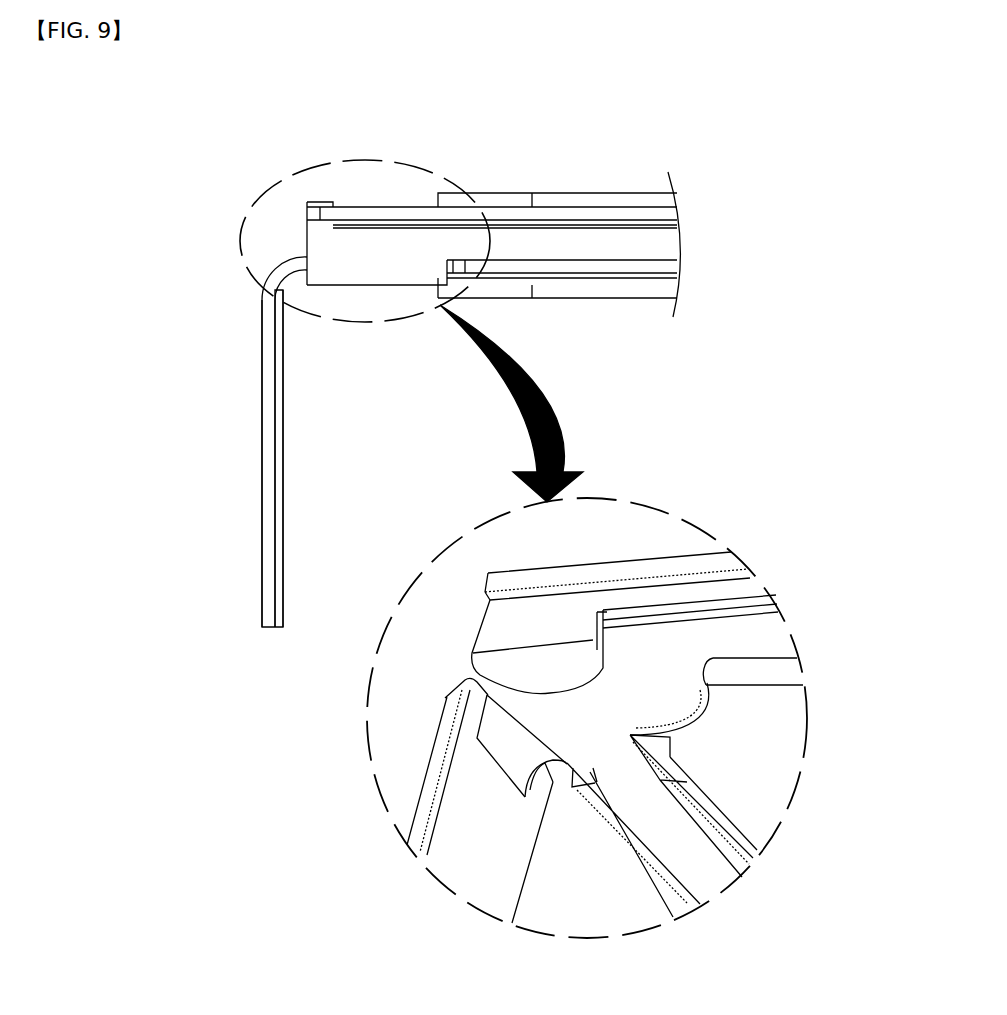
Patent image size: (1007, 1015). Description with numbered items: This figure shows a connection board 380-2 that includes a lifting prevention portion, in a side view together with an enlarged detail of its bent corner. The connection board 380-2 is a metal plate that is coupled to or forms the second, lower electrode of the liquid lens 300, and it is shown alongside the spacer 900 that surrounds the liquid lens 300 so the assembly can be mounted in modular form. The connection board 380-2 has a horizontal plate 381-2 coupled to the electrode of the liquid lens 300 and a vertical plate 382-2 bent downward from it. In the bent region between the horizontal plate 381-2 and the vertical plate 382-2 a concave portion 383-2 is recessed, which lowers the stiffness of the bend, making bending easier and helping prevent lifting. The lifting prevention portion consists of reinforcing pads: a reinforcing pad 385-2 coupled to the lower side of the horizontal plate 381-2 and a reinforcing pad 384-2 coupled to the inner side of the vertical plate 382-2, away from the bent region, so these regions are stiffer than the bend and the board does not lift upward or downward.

The liquid lens 300 is at (650, 292).
The spacer 900 is at (650, 247).
The connection board 380-2 is at (262, 370).
The horizontal plate 381-2 is at (750, 600).
The vertical plate 382-2 is at (268, 542).
The concave portion 383-2 is at (266, 268).
The reinforcing pad 384-2 is at (279, 497).
The reinforcing pad 385-2 is at (758, 640).